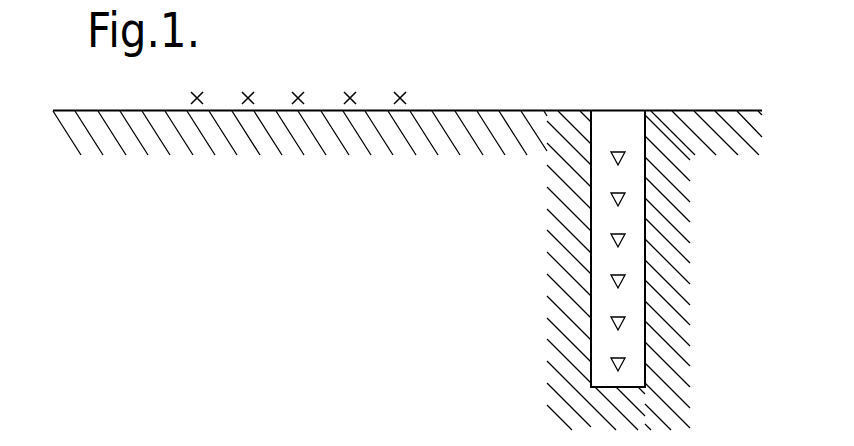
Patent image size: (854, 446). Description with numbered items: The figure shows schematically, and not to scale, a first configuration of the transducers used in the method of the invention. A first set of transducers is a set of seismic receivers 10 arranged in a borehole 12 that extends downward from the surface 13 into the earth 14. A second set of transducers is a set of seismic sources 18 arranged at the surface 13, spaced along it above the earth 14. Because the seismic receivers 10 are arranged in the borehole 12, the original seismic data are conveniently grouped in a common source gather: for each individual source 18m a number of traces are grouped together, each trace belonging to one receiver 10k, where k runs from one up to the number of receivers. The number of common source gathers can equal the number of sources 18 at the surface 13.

The seismic receivers 10 is at (626, 156).
The receiver 10k is at (612, 280).
The borehole 12 is at (646, 386).
The surface 13 is at (501, 74).
The earth 14 is at (337, 298).
The seismic sources 18 is at (398, 94).
The source 18m is at (248, 100).